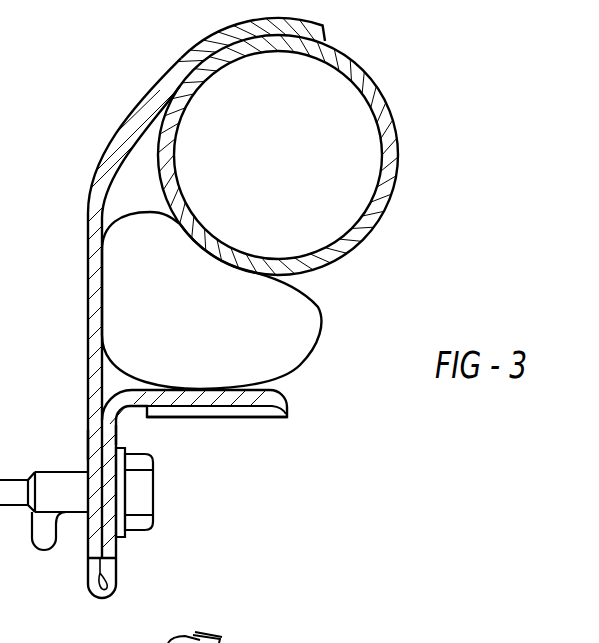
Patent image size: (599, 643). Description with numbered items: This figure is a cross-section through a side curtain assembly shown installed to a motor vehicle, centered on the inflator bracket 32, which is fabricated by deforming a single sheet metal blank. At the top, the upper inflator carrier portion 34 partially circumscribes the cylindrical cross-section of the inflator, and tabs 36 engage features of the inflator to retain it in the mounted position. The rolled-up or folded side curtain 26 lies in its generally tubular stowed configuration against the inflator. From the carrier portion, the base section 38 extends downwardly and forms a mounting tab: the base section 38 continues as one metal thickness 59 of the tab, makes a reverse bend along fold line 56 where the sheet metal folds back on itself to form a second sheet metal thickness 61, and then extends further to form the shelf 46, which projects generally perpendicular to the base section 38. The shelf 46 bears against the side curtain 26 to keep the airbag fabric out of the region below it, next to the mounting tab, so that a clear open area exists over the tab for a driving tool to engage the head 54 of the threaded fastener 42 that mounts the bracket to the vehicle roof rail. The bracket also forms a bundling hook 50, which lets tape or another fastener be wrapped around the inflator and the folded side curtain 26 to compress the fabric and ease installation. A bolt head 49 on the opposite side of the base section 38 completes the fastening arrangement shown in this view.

The side curtain 26 is at (323, 324).
The inflator bracket 32 is at (194, 45).
The upper inflator carrier portion 34 is at (163, 78).
The tabs 36 is at (210, 636).
The base section 38 is at (88, 302).
The threaded fastener 42 is at (155, 493).
The shelf 46 is at (285, 394).
The bolt head 49 is at (84, 551).
The bundling hook 50 is at (286, 418).
The head 54 is at (140, 533).
The fold line 56 is at (103, 598).
The metal thickness 59 is at (86, 446).
The second sheet metal thickness 61 is at (116, 433).